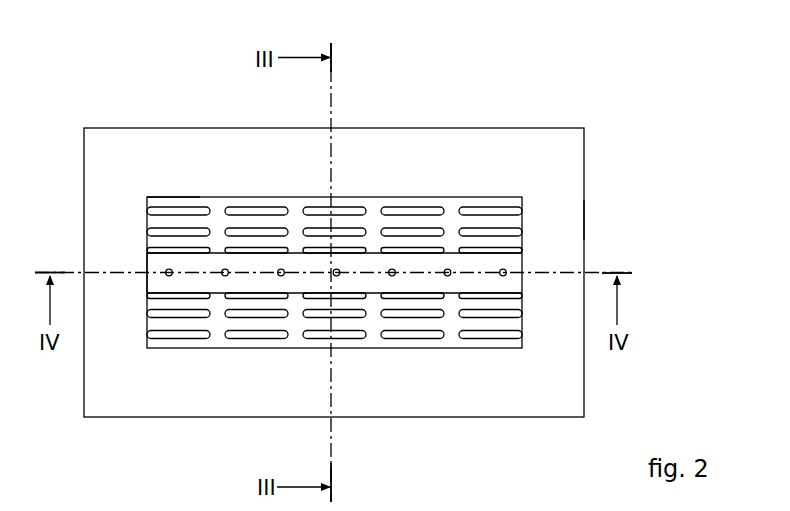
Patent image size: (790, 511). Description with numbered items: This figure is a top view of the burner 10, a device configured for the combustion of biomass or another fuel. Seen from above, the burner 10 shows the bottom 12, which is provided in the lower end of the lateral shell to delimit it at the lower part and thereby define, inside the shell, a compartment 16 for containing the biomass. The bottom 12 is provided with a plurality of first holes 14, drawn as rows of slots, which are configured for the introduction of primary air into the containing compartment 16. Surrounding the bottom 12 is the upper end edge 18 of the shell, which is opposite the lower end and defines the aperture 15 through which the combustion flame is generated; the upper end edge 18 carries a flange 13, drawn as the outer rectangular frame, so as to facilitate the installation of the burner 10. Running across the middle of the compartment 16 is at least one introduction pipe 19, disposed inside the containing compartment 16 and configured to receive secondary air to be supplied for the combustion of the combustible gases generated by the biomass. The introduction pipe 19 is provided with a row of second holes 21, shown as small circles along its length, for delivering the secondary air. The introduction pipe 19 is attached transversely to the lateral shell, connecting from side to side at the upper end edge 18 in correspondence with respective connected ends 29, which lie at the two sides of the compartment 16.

The burner 10 is at (72, 85).
The bottom 12 is at (372, 212).
The flange 13 is at (527, 146).
The first holes 14 is at (256, 211).
The aperture 15 is at (172, 197).
The compartment 16 is at (225, 328).
The upper end edge 18 is at (569, 217).
The introduction pipe 19 is at (152, 262).
The second holes 21 is at (505, 271).
The connected ends 29 is at (152, 285).